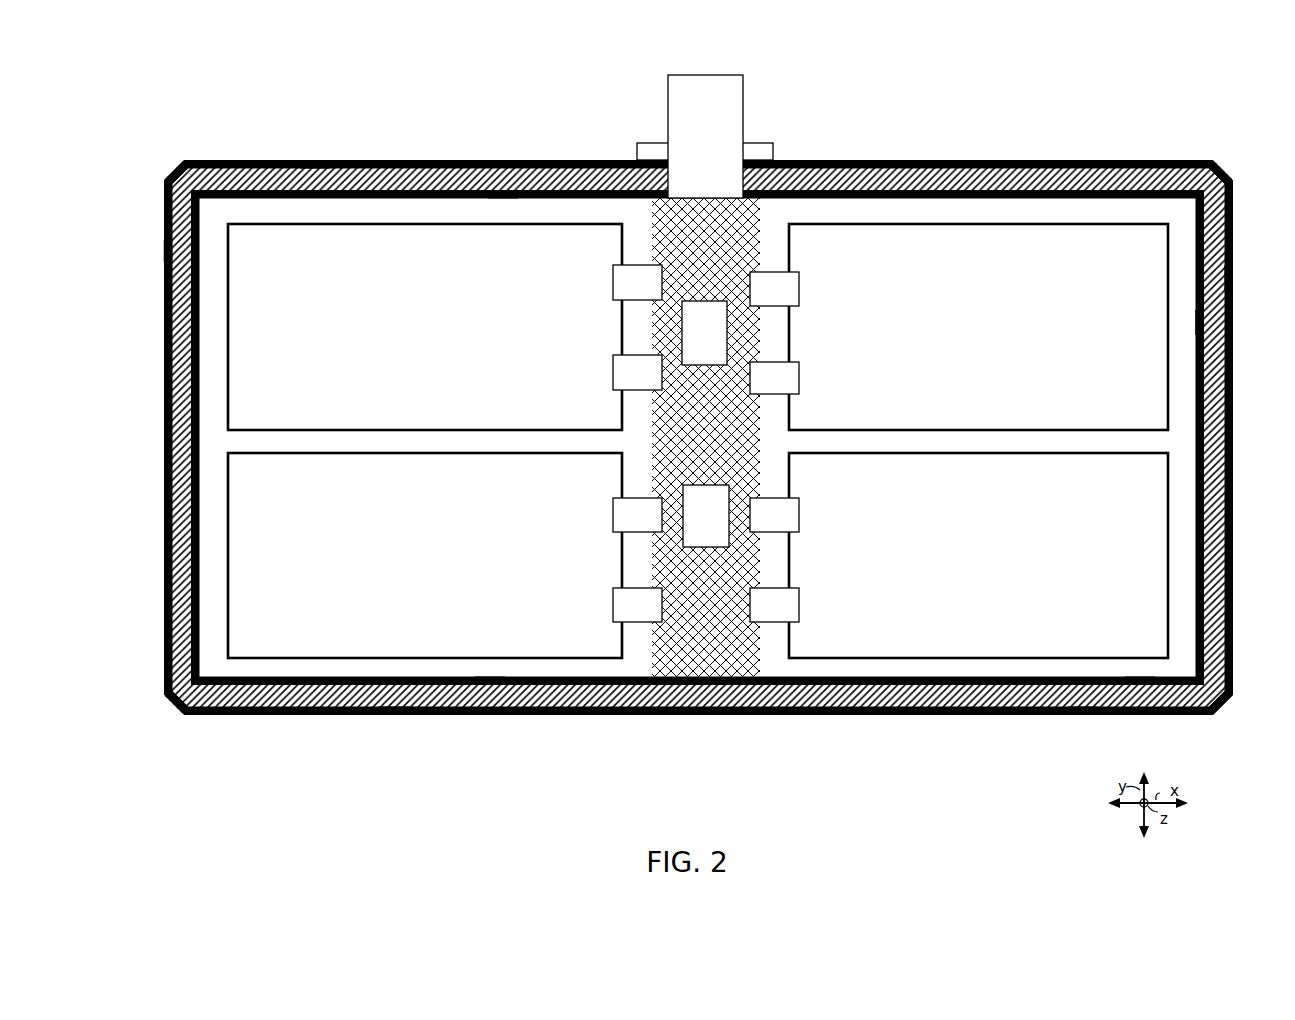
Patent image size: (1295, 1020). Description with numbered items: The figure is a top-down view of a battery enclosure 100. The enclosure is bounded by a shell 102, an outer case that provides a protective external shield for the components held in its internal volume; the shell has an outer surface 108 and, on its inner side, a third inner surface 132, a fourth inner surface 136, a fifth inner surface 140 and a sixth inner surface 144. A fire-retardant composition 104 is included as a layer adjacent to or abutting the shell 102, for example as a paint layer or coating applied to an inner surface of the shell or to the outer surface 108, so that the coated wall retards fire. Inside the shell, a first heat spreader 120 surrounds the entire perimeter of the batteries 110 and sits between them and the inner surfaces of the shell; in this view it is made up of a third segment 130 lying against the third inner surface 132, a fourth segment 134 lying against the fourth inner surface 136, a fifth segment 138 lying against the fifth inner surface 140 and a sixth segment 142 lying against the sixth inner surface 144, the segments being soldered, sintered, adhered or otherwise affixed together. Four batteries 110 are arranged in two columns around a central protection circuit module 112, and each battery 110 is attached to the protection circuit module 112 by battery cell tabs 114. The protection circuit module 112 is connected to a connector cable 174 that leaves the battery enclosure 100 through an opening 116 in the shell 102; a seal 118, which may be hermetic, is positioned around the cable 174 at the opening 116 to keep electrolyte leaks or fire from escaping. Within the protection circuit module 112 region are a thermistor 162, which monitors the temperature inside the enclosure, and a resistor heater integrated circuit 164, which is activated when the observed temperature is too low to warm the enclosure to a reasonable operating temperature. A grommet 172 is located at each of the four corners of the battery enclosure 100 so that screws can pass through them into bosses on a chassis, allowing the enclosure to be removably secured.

The battery enclosure 100 is at (1018, 72).
The shell 102 is at (425, 160).
The fire-retardant composition 104 is at (698, 437).
The outer surface 108 is at (393, 715).
The battery 110 is at (698, 441).
The protection circuit module 112 is at (706, 437).
The battery cell tab 114 is at (706, 443).
The opening 116 is at (712, 135).
The seal 118 is at (653, 150).
The first heat spreader 120 is at (488, 675).
The third segment 130 is at (197, 290).
The third inner surface 132 is at (192, 248).
The fourth segment 134 is at (1197, 323).
The fourth inner surface 136 is at (1220, 277).
The fifth segment 138 is at (502, 197).
The fifth inner surface 140 is at (313, 172).
The sixth segment 142 is at (1138, 677).
The sixth inner surface 144 is at (1082, 707).
The thermistor 162 is at (704, 333).
The resistor heater integrated circuit 164 is at (706, 516).
The grommet 172 is at (170, 164).
The connector cable 174 is at (759, 119).